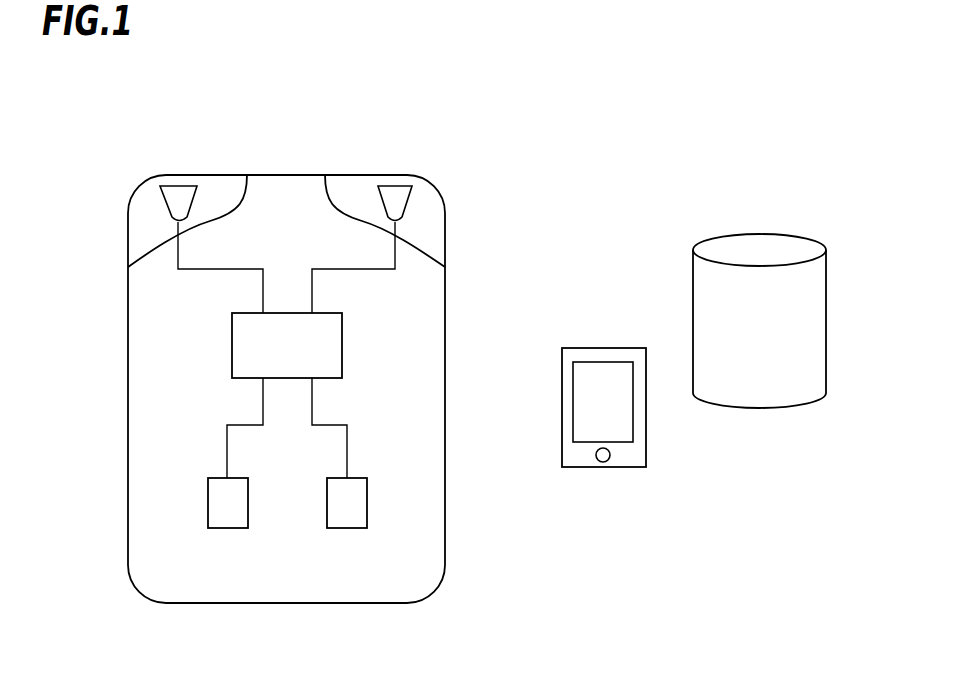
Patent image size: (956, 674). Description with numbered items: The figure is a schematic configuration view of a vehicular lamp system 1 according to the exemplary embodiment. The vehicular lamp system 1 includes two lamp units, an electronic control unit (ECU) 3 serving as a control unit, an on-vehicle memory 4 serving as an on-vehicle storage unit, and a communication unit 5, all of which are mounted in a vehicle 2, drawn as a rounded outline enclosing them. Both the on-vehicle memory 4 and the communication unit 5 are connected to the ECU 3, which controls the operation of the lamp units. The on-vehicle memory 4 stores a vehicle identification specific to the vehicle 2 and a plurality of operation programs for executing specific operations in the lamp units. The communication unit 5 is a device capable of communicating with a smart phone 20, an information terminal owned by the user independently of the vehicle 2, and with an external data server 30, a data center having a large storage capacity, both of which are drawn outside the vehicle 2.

The vehicular lamp system 1 is at (286, 344).
The vehicle 2 is at (128, 367).
The electronic control unit (ECU) 3 is at (342, 340).
The on-vehicle memory 4 is at (208, 500).
The communication unit 5 is at (367, 498).
The smart phone 20 is at (608, 467).
The external data server 30 is at (778, 234).